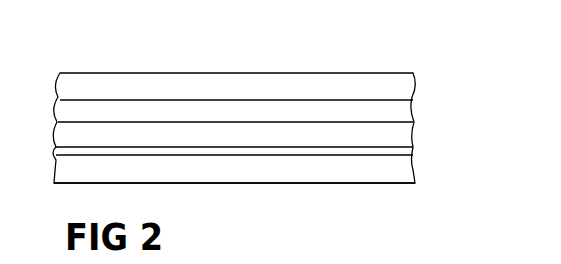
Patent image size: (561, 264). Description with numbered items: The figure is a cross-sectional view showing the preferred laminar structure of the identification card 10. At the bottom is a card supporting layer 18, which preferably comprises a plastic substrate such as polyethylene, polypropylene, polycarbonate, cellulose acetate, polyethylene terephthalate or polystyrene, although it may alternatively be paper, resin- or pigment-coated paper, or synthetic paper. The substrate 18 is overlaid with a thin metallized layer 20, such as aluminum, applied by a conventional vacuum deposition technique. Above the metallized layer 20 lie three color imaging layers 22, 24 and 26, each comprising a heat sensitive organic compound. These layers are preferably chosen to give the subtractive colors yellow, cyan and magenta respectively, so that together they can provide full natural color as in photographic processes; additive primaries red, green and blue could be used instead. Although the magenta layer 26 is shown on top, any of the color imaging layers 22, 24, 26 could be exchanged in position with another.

The identification card 10 is at (396, 49).
The card supporting layer 18 is at (412, 166).
The metallized layer 20 is at (411, 150).
The color imaging layer 22 is at (411, 136).
The color imaging layer 24 is at (413, 109).
The color imaging layer 26 is at (413, 86).